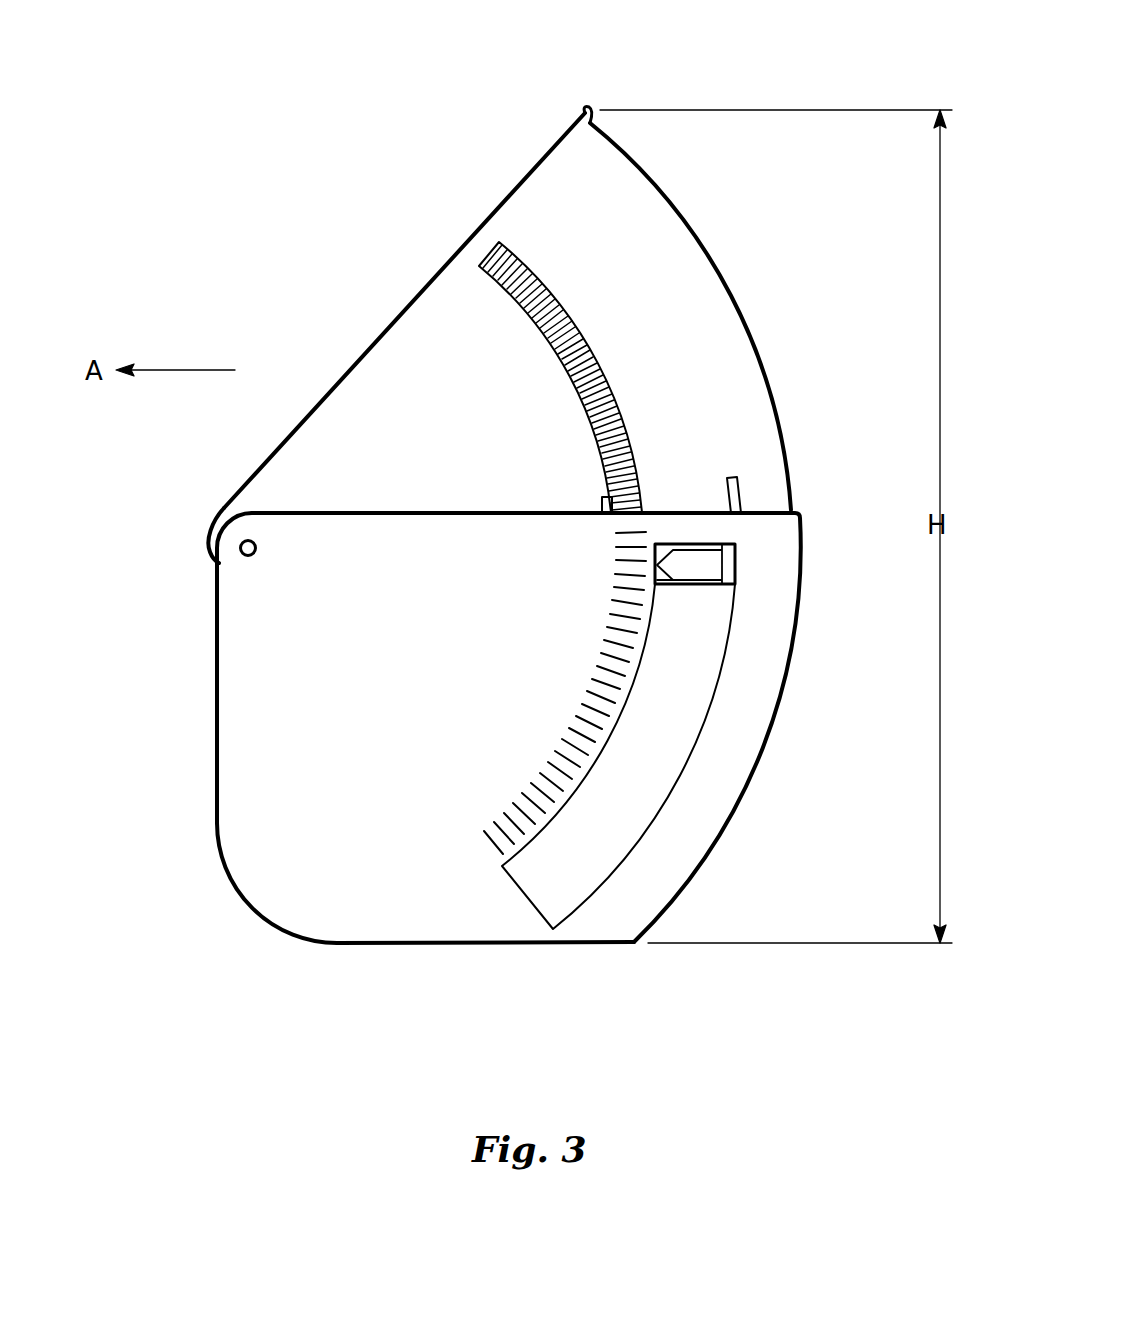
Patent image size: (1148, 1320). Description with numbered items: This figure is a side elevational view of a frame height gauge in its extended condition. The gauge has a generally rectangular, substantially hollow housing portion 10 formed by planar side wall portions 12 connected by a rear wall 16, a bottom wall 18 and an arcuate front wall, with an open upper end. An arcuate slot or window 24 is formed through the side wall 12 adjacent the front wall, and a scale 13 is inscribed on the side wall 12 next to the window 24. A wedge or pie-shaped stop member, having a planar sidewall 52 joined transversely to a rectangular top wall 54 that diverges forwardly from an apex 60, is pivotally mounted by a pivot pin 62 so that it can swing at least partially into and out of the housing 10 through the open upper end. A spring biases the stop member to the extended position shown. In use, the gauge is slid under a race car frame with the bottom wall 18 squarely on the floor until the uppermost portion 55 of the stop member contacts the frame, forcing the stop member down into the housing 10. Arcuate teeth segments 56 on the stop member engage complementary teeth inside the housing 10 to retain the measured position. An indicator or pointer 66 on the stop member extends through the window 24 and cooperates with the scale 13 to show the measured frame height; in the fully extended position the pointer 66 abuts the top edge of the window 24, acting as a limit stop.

The housing portion 10 is at (160, 800).
The side wall portion 12 is at (380, 782).
The scale 13 is at (555, 752).
The rear wall 16 is at (217, 638).
The bottom wall 18 is at (467, 944).
The arcuate slot or window 24 is at (667, 752).
The wedge-shaped sidewall 52 is at (469, 451).
The top wall 54 is at (398, 312).
The uppermost portion 55 is at (585, 110).
The arcuate teeth segment 56 is at (580, 323).
The apex 60 is at (210, 527).
The pivot pin 62 is at (240, 553).
The indicator or pointer 66 is at (706, 568).